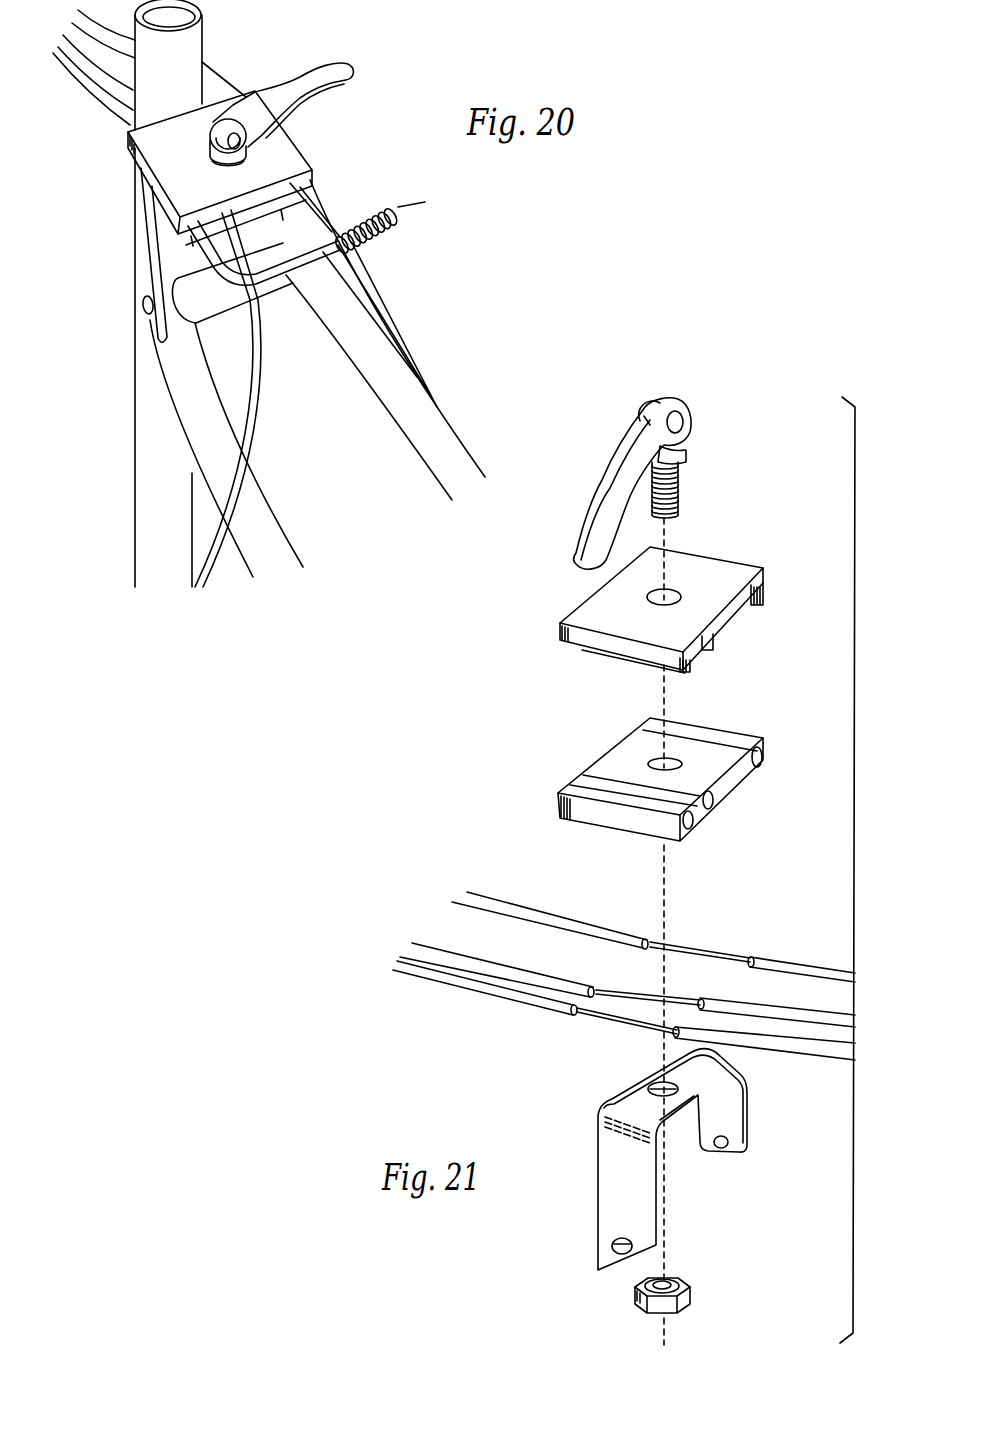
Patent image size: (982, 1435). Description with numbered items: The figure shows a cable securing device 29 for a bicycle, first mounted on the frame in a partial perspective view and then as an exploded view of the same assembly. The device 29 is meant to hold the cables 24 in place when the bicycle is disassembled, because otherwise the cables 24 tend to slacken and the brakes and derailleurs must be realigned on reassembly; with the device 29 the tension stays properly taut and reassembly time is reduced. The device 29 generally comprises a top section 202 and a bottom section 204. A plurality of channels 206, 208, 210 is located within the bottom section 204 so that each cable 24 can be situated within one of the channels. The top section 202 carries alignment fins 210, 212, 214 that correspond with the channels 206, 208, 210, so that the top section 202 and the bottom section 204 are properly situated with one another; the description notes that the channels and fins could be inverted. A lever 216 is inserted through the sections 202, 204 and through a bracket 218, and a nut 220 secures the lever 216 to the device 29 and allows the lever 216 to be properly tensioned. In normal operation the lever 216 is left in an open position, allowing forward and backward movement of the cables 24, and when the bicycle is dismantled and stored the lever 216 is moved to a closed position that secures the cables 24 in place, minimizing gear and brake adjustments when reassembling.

In FIG. 20, the cables 24 is at (90, 23).
In FIG. 21, the cables 24 is at (498, 963).
In FIG. 20, the cable securing device 29 is at (293, 158).
In FIG. 21, the cable securing device 29 is at (854, 872).
In FIG. 21, the top section 202 is at (613, 618).
In FIG. 21, the bottom section 204 is at (617, 760).
In FIG. 21, the channel 206 is at (770, 763).
In FIG. 21, the channel 208 is at (718, 795).
In FIG. 21, the channel / alignment fin 210 is at (764, 597).
In FIG. 21, the alignment fin 212 is at (713, 647).
In FIG. 21, the alignment fin 214 is at (690, 667).
In FIG. 20, the lever 216 is at (326, 60).
In FIG. 21, the lever 216 is at (588, 522).
In FIG. 20, the bracket 218 is at (147, 262).
In FIG. 21, the bracket 218 is at (603, 1148).
In FIG. 21, the nut 220 is at (683, 1302).